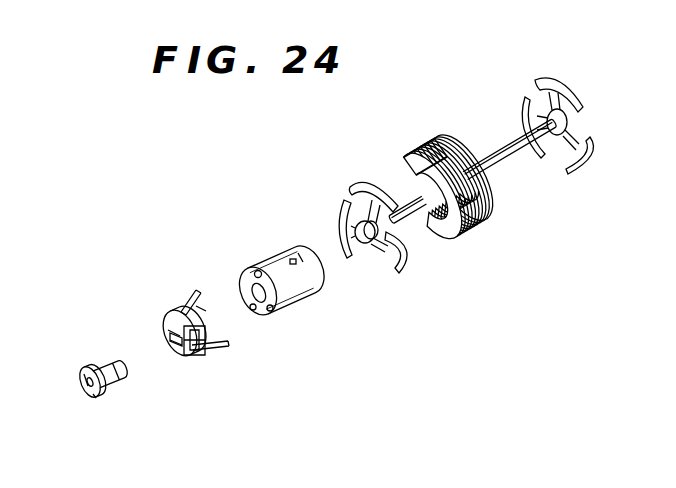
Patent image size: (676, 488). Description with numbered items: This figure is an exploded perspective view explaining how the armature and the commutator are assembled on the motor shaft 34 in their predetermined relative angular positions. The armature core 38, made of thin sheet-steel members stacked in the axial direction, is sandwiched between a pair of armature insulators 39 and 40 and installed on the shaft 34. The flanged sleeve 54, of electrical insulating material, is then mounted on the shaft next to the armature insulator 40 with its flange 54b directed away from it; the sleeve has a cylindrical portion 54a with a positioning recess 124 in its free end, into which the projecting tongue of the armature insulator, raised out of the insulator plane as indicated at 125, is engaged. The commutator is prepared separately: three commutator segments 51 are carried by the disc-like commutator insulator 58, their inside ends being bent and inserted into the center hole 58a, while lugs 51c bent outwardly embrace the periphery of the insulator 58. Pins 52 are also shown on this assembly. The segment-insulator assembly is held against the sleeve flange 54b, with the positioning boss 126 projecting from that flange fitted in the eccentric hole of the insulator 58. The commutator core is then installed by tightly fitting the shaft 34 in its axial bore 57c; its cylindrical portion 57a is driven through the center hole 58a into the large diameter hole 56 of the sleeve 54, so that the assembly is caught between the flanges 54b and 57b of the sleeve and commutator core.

The shaft 34 is at (367, 243).
The armature core 38 is at (452, 118).
The armature insulator 39 is at (543, 78).
The armature insulator 40 is at (360, 182).
The commutator segments 51 is at (185, 318).
The lugs 51c is at (168, 338).
The pins 52 is at (192, 310).
The flanged sleeve 54 is at (295, 283).
The cylindrical portion 54a is at (299, 252).
The flange 54b is at (275, 308).
The large diameter hole 56 is at (250, 268).
The cylindrical portion 57a is at (108, 364).
The flange 57b is at (96, 398).
The axial bore 57c is at (82, 392).
The commutator insulator 58 is at (200, 360).
The center hole 58a is at (168, 350).
The positioning recess 124 is at (290, 256).
The raised tongue 125 is at (410, 237).
The positioning boss 126 is at (257, 310).